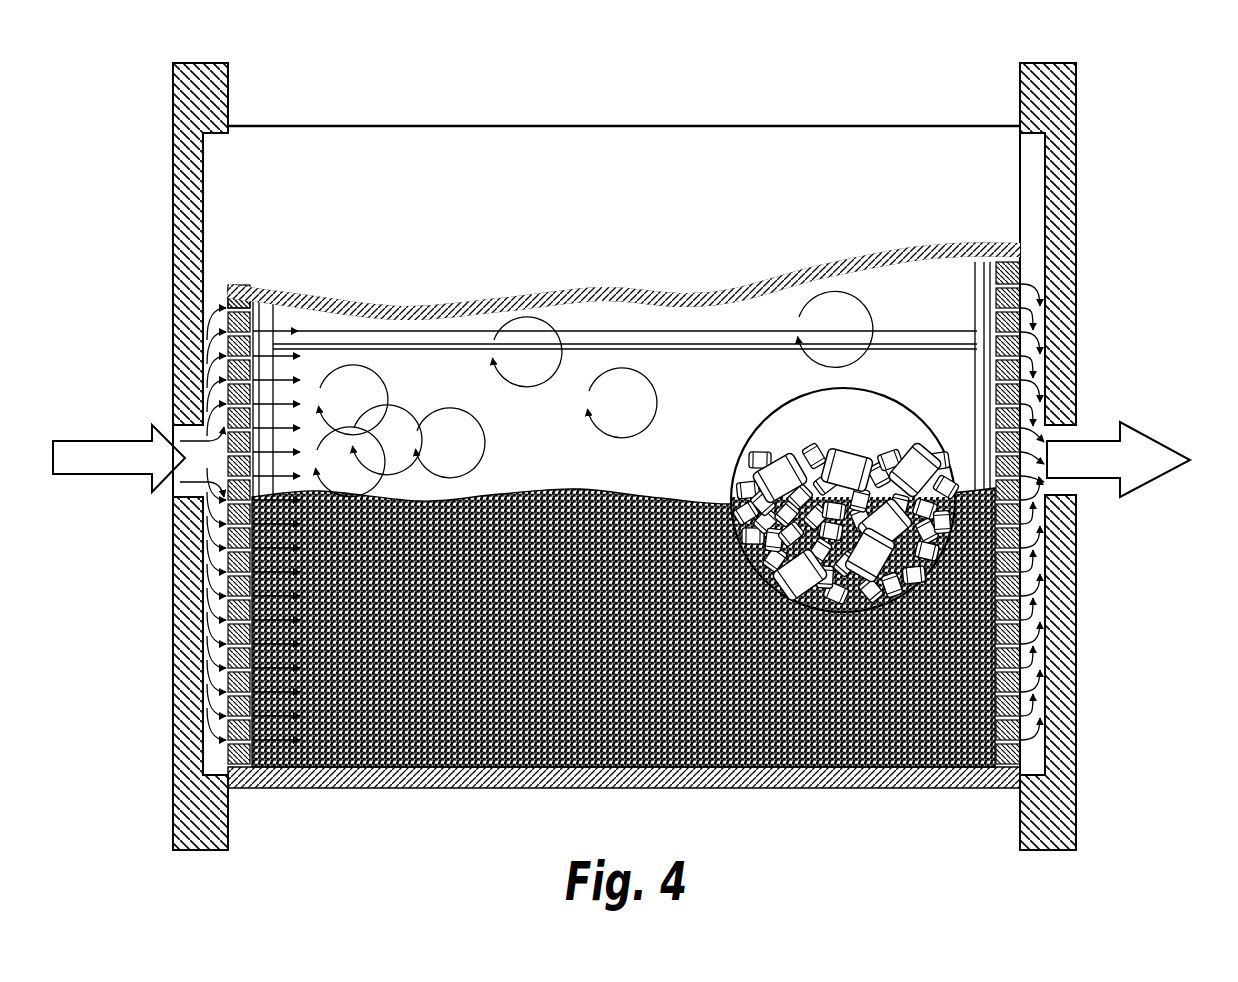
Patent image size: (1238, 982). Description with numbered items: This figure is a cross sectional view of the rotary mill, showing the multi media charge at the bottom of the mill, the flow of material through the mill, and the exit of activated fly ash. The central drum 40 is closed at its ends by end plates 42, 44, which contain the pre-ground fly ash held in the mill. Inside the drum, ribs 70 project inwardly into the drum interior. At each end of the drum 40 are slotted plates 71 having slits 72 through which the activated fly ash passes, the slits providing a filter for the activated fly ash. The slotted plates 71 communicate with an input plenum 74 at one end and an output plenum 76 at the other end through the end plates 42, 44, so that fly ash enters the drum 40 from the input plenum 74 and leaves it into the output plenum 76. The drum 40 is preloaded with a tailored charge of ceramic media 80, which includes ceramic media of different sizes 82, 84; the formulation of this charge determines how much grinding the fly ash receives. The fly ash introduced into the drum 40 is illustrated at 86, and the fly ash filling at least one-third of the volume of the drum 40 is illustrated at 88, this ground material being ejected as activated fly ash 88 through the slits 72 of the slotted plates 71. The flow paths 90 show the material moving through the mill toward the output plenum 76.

The central drum 40 is at (643, 145).
The end plate 42 is at (232, 80).
The end plate 44 is at (1078, 80).
The rib 70 is at (1012, 785).
The slotted end exit plate 71 is at (245, 288).
The slit 72 is at (268, 297).
The input plenum 74 is at (215, 165).
The output plenum 76 is at (1032, 184).
The tailored charge of ceramic media 80 is at (850, 488).
The ceramic media 82 is at (918, 450).
The ceramic media 84 is at (822, 462).
The fly ash introduced into drum 86 is at (128, 450).
The activated fly ash 88 is at (1112, 425).
The gas flow paths 90 is at (1012, 706).